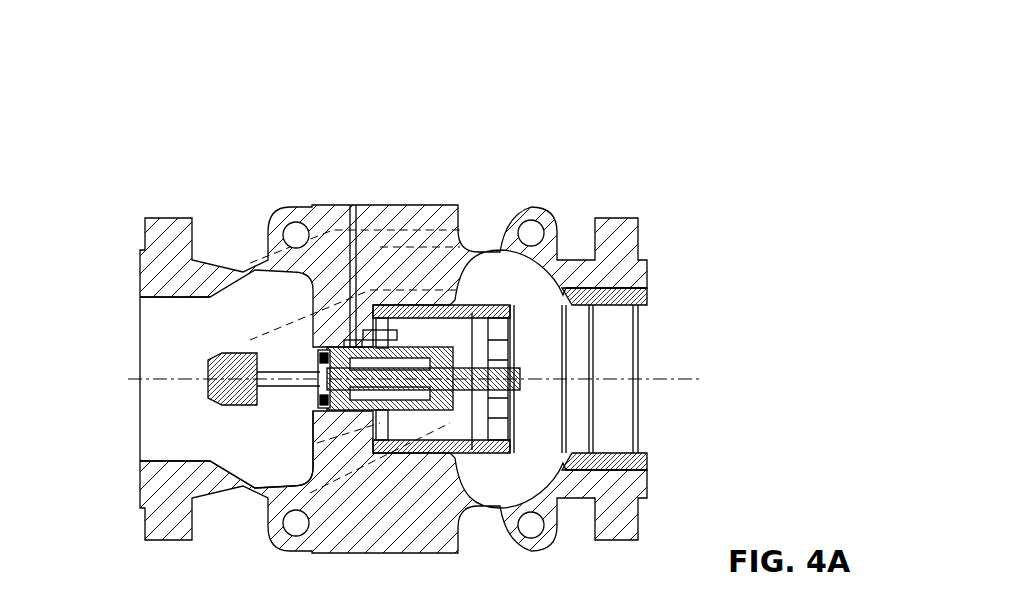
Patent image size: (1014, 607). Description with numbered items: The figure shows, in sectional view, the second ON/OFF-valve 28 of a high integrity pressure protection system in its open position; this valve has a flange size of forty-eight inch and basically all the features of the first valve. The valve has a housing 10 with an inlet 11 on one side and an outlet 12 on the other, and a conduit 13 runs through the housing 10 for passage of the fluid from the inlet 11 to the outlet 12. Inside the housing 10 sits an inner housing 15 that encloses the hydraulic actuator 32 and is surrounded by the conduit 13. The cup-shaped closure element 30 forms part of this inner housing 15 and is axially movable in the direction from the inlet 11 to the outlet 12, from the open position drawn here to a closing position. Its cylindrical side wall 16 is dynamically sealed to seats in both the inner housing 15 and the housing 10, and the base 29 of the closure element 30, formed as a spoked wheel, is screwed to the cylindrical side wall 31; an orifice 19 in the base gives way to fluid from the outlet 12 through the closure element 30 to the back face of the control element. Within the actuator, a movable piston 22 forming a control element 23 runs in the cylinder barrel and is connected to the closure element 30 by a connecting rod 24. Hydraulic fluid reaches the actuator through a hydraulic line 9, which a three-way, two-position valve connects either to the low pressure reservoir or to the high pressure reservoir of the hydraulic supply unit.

The hydraulic line 9 is at (353, 218).
The housing 10 is at (243, 272).
The inlet 11 is at (140, 335).
The outlet 12 is at (643, 332).
The conduit 13 is at (247, 457).
The inner housing 15 is at (297, 428).
The cylindrical side wall 16 is at (320, 357).
The orifice 19 is at (490, 425).
The movable piston 22 is at (212, 383).
The control element 23 is at (325, 382).
The connecting rod 24 is at (485, 381).
The second ON/OFF-valve 28 is at (627, 150).
The base 29 is at (654, 469).
The closure element 30 is at (470, 307).
The cylindrical side wall 31 is at (441, 296).
The hydraulic actuator 32 is at (345, 452).